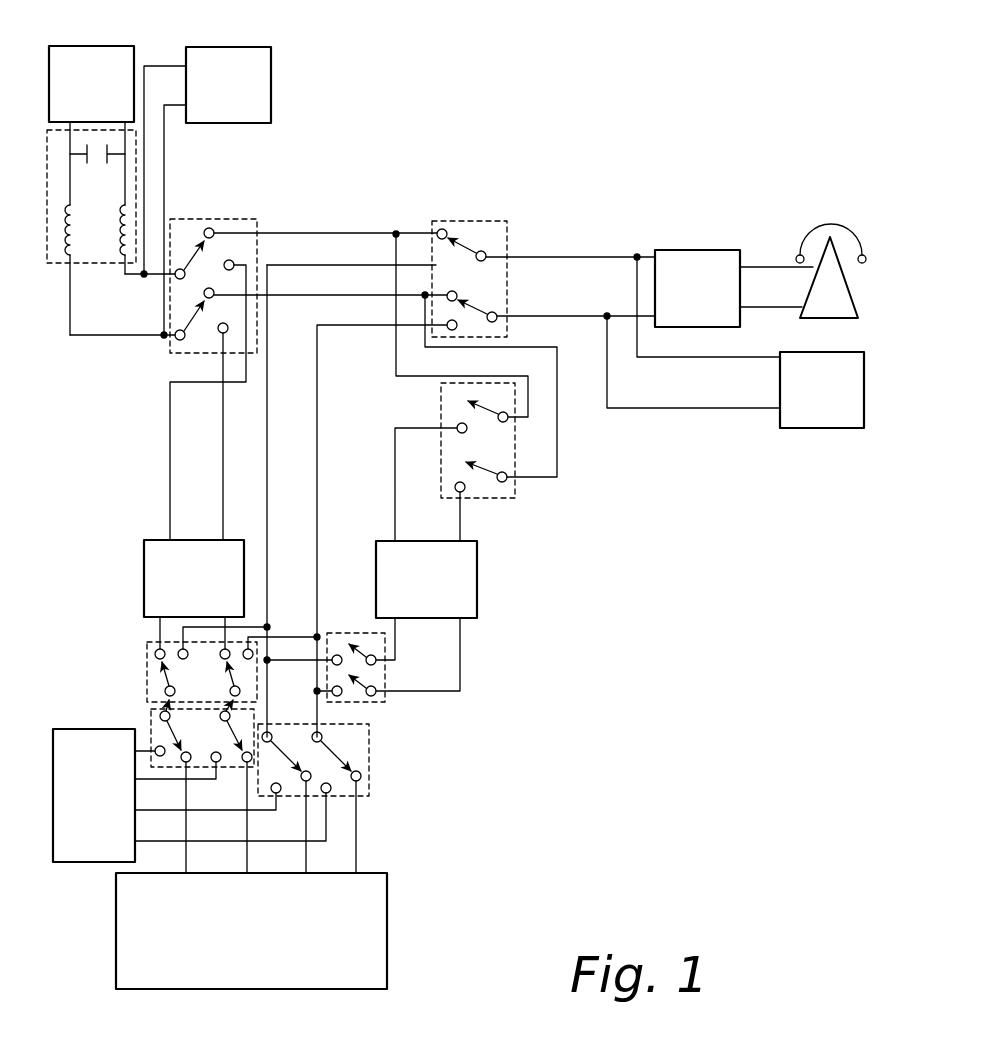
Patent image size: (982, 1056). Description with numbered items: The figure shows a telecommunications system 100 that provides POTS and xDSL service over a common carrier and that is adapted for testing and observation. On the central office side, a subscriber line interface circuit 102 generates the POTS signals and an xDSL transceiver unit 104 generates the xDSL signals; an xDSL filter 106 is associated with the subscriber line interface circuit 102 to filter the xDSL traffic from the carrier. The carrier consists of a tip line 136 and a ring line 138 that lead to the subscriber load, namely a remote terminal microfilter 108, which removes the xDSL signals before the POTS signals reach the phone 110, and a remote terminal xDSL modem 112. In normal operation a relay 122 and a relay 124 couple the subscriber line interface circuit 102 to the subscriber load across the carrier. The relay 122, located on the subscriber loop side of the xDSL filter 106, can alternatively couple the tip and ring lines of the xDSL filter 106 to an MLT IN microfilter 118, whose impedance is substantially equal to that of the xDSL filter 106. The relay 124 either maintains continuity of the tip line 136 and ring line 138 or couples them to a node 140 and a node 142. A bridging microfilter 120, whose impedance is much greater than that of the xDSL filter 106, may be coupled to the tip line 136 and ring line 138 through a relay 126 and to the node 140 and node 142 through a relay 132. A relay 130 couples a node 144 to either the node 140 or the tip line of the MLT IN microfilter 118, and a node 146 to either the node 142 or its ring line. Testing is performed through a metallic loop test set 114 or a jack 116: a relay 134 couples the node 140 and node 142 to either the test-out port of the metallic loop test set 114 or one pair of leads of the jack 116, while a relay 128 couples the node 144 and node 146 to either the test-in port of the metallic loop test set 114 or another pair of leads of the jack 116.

The telecommunications system 100 is at (582, 85).
The subscriber line interface circuit 102 is at (65, 46).
The xDSL transceiver unit 104 is at (197, 46).
The xDSL filter 106 is at (92, 263).
The remote terminal microfilter 108 is at (672, 250).
The phone 110 is at (852, 294).
The remote terminal xDSL modem 112 is at (790, 428).
The metallic loop test set 114 is at (367, 989).
The jack 116 is at (70, 862).
The MLT IN microfilter 118 is at (158, 540).
The bridging microfilter 120 is at (477, 577).
The relay 122 is at (241, 219).
The relay 124 is at (448, 221).
The relay 126 is at (503, 498).
The relay 128 is at (144, 695).
The relay 130 is at (147, 655).
The relay 132 is at (373, 705).
The relay 134 is at (369, 765).
The tip line 136 is at (530, 256).
The ring line 138 is at (546, 316).
The node 140 is at (268, 659).
The node 142 is at (315, 691).
The node 144 is at (168, 704).
The node 146 is at (226, 709).